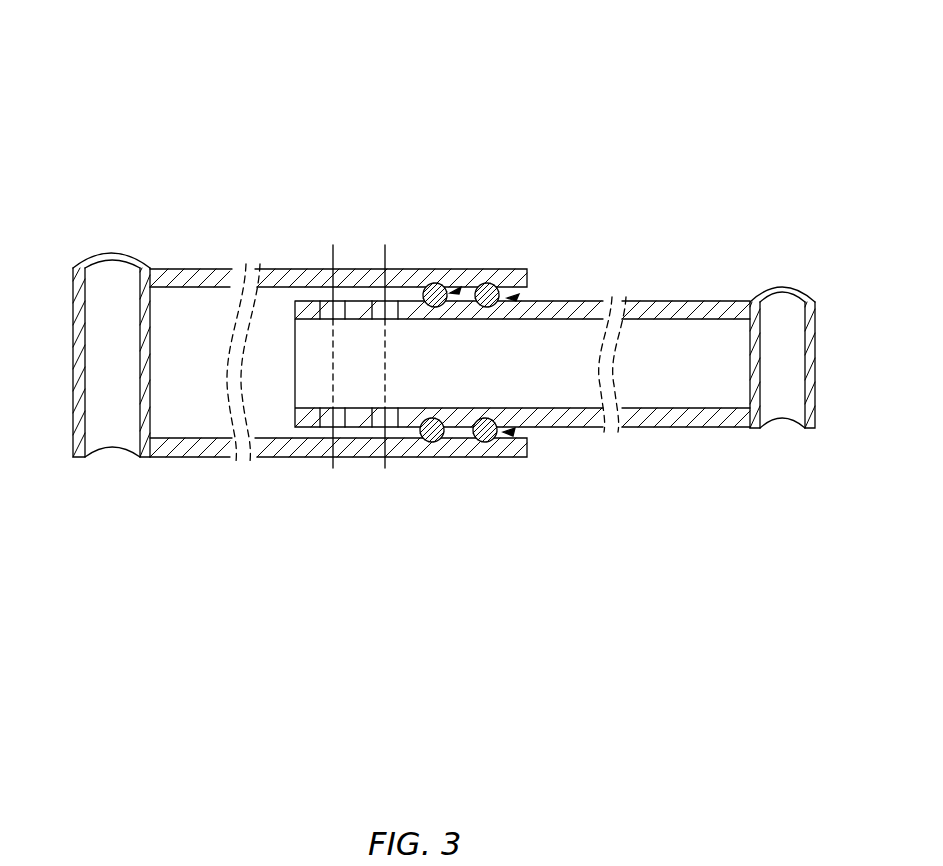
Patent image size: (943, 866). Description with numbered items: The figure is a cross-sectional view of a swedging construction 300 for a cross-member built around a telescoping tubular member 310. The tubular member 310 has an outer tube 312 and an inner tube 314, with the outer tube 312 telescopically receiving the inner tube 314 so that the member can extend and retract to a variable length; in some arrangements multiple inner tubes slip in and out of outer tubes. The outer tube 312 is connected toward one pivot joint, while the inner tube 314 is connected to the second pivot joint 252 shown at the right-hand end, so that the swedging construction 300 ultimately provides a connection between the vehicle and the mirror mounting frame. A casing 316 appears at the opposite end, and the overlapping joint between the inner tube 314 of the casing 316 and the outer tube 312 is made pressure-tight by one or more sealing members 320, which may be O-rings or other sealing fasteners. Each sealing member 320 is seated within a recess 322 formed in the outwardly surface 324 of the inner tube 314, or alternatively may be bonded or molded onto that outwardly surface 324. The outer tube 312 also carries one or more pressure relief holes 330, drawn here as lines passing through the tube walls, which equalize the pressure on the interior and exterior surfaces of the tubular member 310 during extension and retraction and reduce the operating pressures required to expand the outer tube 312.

The swedging construction 300 is at (72, 165).
The tubular member 310 is at (400, 513).
The outer tube 312 is at (277, 267).
The inner tube 314 is at (707, 313).
The casing 316 is at (157, 267).
The second pivot joint 252 is at (807, 430).
The sealing member 320 is at (431, 283).
The recess 322 is at (457, 281).
The outwardly surface 324 is at (454, 291).
The pressure relief hole 330 is at (333, 250).